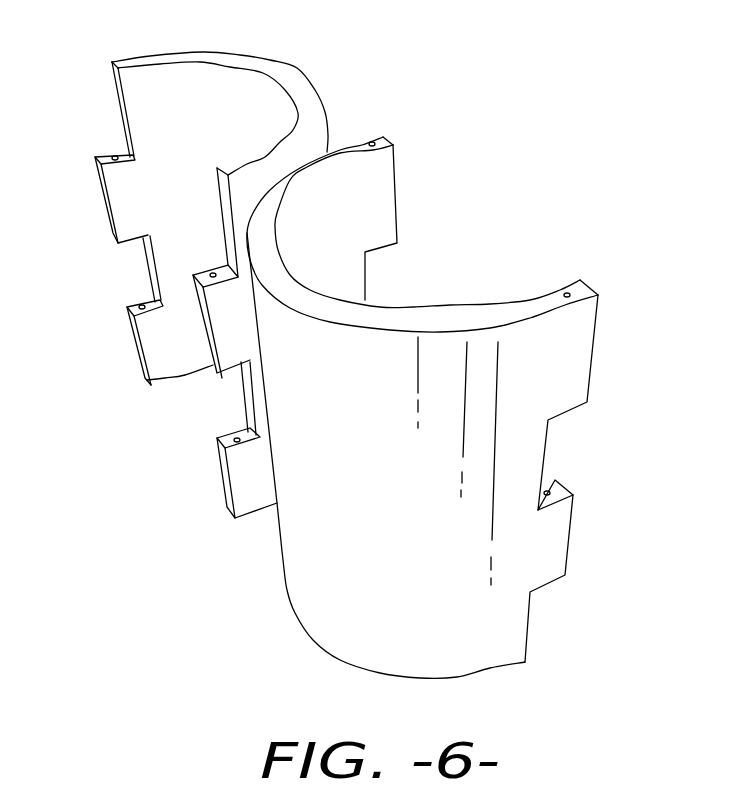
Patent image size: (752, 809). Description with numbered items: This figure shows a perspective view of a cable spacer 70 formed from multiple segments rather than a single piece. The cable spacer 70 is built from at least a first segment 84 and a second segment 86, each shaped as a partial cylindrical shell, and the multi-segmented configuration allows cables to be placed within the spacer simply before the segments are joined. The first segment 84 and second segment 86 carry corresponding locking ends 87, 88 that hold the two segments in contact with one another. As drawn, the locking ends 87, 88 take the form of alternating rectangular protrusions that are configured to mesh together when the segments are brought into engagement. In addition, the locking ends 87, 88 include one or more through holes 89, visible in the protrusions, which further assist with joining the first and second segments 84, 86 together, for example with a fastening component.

The cable spacer 70 is at (576, 117).
The first segment 84 is at (260, 64).
The second segment 86 is at (389, 312).
The locking end 87 is at (127, 194).
The locking end 88 is at (401, 215).
The through hole 89 is at (373, 140).